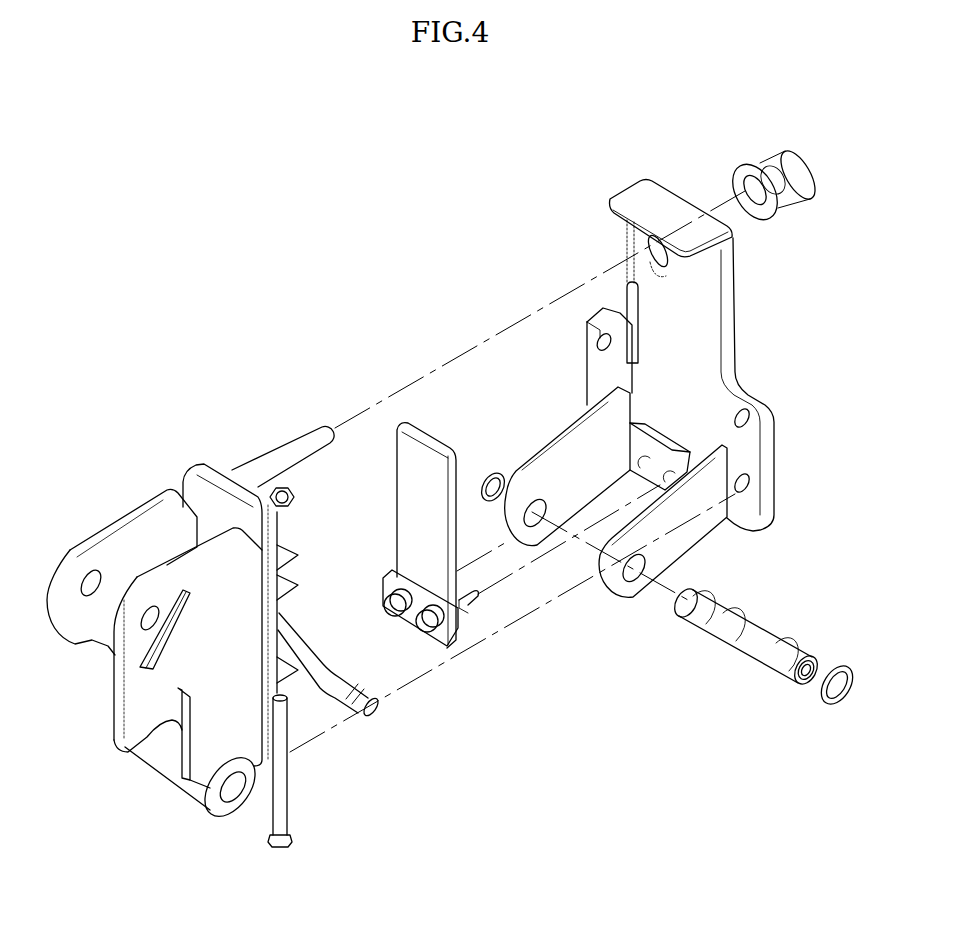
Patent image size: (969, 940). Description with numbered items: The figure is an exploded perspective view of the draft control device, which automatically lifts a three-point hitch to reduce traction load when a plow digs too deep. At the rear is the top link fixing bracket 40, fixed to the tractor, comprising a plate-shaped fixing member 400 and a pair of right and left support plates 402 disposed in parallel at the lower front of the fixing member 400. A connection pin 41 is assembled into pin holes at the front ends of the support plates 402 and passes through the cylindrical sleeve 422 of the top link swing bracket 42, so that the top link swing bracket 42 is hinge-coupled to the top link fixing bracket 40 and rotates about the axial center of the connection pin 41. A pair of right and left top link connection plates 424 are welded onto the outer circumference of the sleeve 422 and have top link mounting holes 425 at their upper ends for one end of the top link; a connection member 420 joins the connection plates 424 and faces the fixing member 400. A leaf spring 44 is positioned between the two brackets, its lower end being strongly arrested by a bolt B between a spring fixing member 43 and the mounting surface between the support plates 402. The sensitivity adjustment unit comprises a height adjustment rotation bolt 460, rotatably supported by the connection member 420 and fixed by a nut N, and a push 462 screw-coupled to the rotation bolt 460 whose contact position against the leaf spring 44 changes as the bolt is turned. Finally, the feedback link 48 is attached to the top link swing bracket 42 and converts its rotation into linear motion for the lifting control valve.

The top link fixing bracket 40 is at (835, 316).
The fixing member 400 is at (736, 352).
The support plates 402 is at (735, 506).
The connection pin 41 is at (740, 657).
The top link swing bracket 42 is at (202, 398).
The connection member 420 is at (200, 463).
The sleeve 422 is at (166, 765).
The top link connection plates 424 is at (163, 563).
The top link mounting holes 425 is at (100, 641).
The spring fixing member 43 is at (427, 640).
The leaf spring 44 is at (393, 443).
The feedback link 48 is at (345, 708).
The height adjustment rotation bolt 460 is at (292, 807).
The push 462 is at (298, 566).
The nut N is at (279, 485).
The bolt B is at (414, 627).